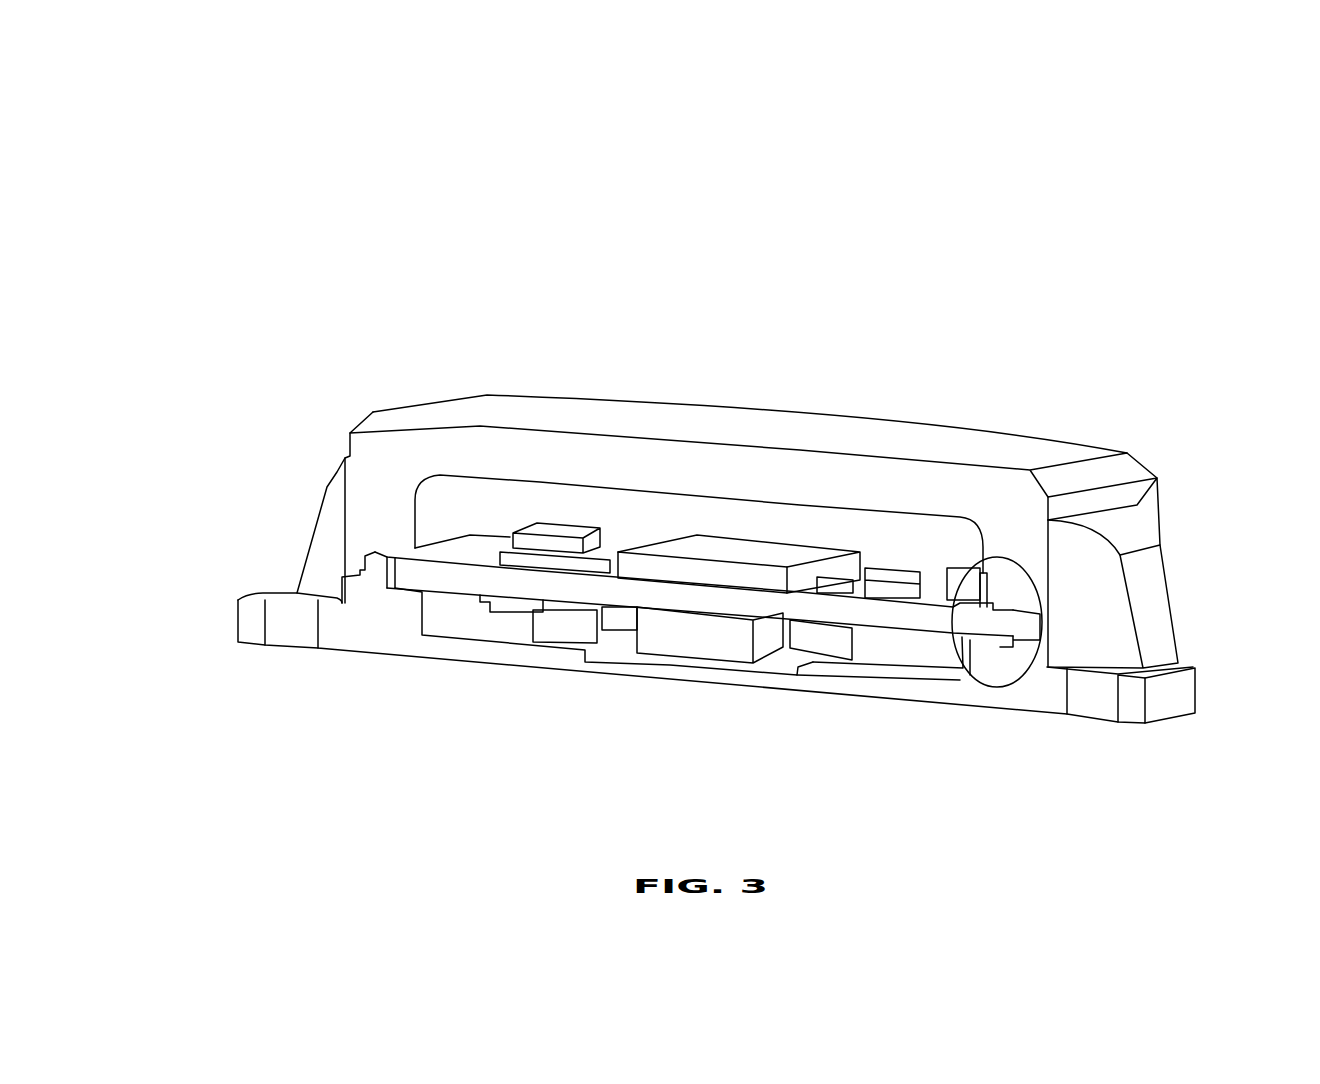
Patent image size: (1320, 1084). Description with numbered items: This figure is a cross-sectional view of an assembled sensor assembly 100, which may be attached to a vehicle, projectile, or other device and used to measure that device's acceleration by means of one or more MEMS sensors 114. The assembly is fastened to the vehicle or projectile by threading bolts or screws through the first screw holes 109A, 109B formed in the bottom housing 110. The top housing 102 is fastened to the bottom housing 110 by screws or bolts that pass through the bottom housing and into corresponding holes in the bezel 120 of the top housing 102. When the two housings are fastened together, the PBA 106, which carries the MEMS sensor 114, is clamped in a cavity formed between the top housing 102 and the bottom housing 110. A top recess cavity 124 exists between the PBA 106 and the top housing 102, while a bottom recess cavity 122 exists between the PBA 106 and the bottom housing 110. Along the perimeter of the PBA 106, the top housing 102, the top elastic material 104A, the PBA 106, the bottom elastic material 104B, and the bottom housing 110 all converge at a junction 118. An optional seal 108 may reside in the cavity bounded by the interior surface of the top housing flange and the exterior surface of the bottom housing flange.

The sensor assembly 100 is at (447, 165).
The top housing 102 is at (1025, 455).
The top elastic material 104A is at (981, 585).
The bottom elastic material 104B is at (972, 673).
The PBA 106 is at (707, 607).
The seal 108 is at (1033, 613).
The first screw hole 109A is at (288, 637).
The first screw hole 109B is at (1097, 708).
The bottom housing 110 is at (372, 628).
The MEMS sensor 114 is at (703, 563).
The junction 118 is at (995, 688).
The bezel 120 is at (1167, 633).
The bottom recess cavity 122 is at (453, 613).
The top recess cavity 124 is at (513, 500).